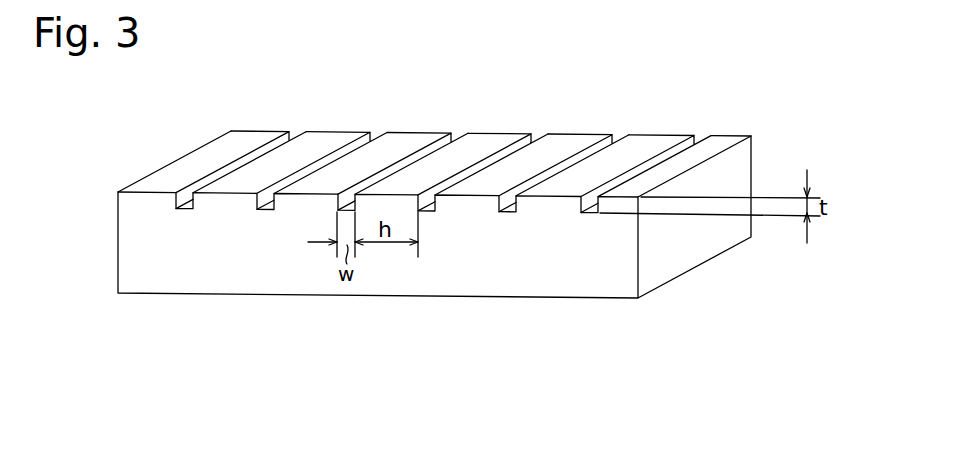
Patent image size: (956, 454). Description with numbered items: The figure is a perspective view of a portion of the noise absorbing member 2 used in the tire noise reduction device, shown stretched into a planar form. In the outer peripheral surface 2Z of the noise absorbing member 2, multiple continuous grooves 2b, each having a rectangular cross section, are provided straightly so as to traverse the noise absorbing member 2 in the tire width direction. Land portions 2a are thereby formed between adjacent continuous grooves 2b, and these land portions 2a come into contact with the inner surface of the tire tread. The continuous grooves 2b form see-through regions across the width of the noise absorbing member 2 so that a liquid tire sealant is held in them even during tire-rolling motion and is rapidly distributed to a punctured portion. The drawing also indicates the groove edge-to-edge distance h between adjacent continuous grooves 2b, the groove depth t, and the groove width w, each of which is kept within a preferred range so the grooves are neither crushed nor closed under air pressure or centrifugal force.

The outer peripheral surface 2Z is at (708, 112).
The noise absorbing member 2 is at (695, 240).
The land portions 2a is at (413, 142).
The continuous grooves 2b is at (265, 203).